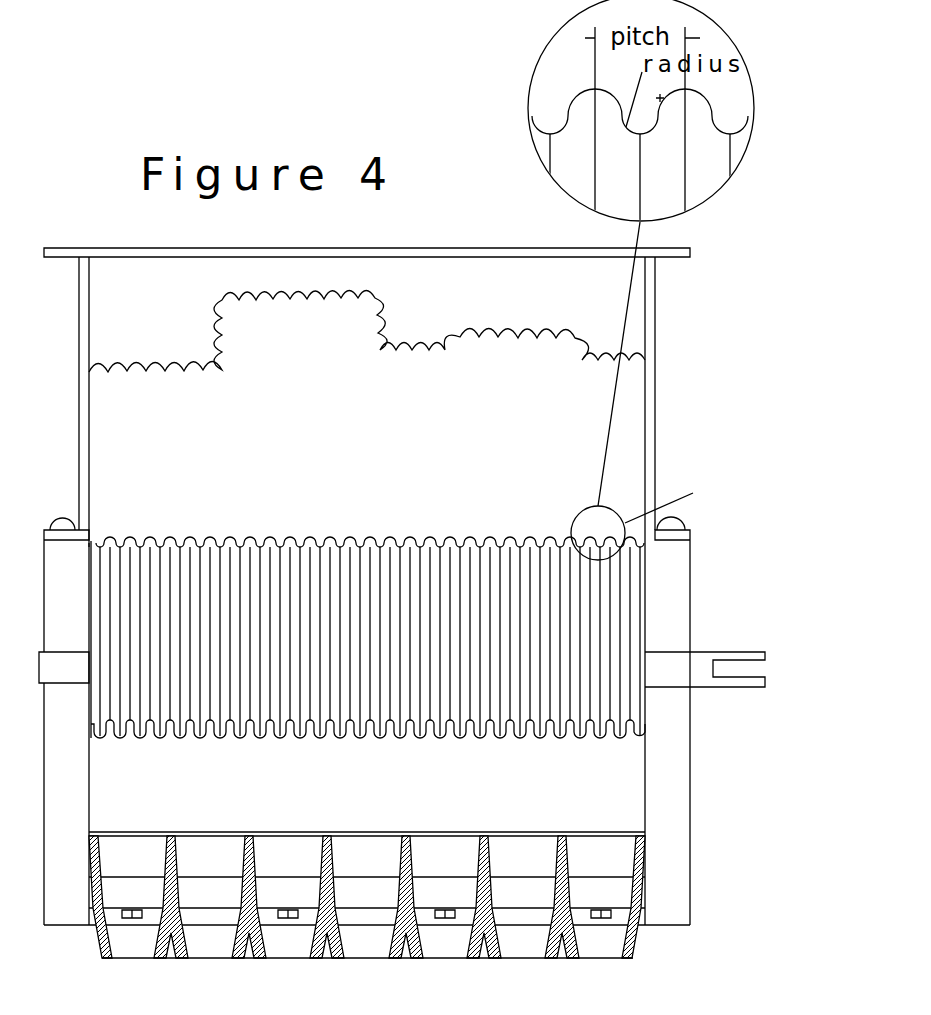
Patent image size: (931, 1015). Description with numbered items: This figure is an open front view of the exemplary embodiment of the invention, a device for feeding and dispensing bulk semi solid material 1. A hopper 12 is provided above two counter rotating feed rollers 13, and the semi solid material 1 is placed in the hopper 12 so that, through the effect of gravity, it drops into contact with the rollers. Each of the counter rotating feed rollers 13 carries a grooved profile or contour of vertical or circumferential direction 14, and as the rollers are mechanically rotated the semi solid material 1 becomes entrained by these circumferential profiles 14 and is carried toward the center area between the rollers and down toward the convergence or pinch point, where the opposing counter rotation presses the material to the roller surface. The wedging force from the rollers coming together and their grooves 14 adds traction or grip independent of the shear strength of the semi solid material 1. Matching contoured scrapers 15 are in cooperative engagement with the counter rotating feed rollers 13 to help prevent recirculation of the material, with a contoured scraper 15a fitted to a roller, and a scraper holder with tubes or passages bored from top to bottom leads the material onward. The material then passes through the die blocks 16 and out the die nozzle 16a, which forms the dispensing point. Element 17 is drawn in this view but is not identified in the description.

The semi solid material 1 is at (364, 591).
The hopper 12 is at (370, 247).
The counter rotating feed rollers 13 is at (647, 613).
The circumferential profile 14 is at (630, 583).
The matching contoured scrapers 15 is at (573, 778).
The matching contoured scraper 15a is at (598, 850).
The die blocks 16 is at (617, 893).
The die nozzle 16a is at (608, 942).
The side pipe 17 is at (765, 657).